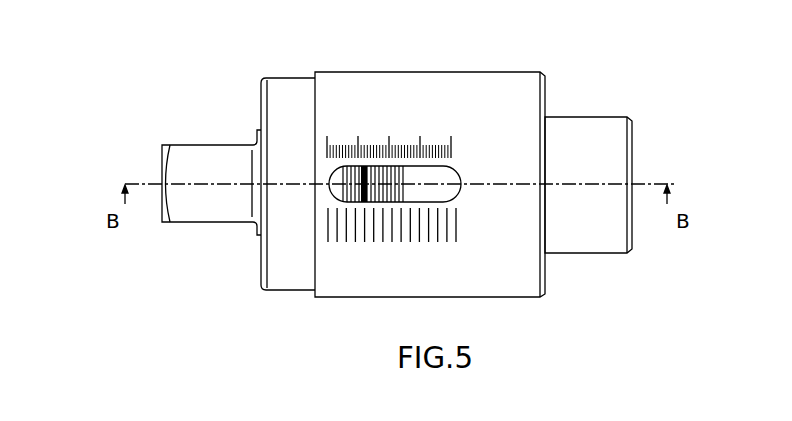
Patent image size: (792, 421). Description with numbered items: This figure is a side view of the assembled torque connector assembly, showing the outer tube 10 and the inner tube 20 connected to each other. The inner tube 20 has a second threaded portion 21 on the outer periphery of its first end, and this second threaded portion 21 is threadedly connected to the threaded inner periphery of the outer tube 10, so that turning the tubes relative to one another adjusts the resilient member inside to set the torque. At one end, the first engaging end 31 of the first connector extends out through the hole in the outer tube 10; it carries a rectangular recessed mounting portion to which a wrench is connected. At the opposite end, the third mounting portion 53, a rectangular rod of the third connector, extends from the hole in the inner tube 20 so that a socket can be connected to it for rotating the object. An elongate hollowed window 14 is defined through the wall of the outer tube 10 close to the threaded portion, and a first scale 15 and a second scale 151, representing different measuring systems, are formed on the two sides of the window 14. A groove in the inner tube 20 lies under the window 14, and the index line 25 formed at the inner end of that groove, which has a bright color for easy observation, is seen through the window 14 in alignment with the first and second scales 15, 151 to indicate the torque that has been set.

The outer tube 10 is at (527, 78).
The inner tube 20 is at (268, 100).
The third mounting portion 53 is at (191, 157).
The first engaging end 31 is at (593, 243).
The first scale 15 is at (407, 143).
The hollowed window 14 is at (442, 202).
The second threaded portion 21 is at (380, 170).
The index line 25 is at (362, 170).
The second scale 151 is at (375, 237).